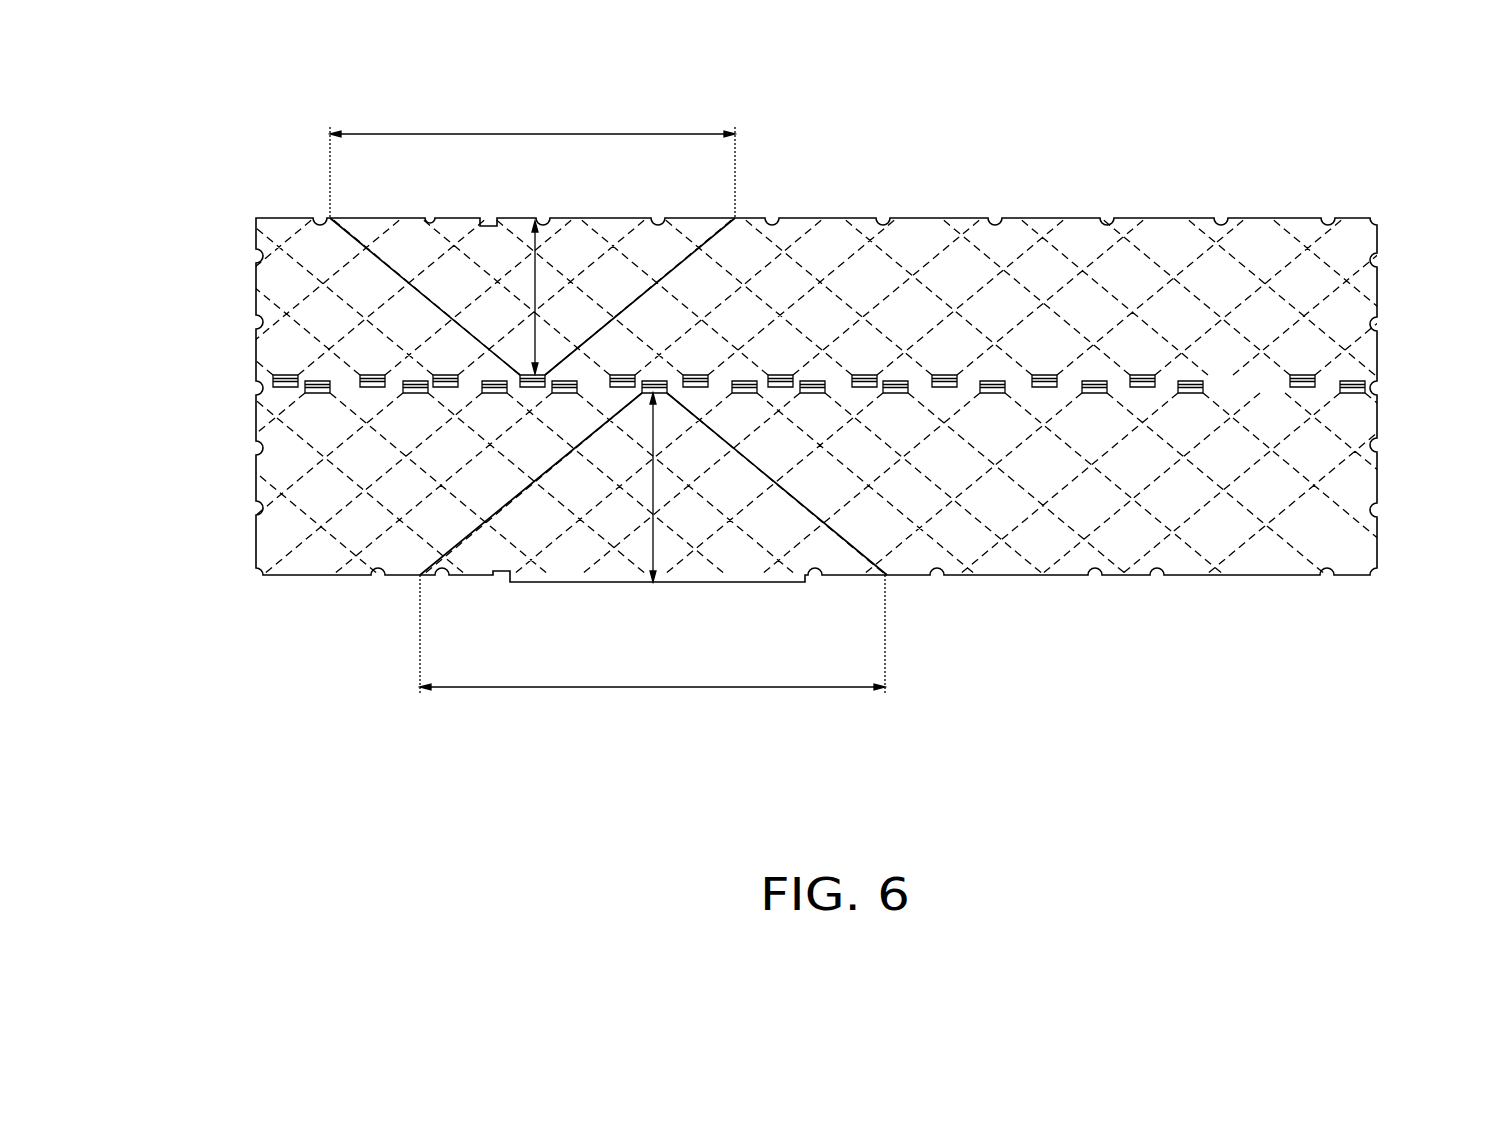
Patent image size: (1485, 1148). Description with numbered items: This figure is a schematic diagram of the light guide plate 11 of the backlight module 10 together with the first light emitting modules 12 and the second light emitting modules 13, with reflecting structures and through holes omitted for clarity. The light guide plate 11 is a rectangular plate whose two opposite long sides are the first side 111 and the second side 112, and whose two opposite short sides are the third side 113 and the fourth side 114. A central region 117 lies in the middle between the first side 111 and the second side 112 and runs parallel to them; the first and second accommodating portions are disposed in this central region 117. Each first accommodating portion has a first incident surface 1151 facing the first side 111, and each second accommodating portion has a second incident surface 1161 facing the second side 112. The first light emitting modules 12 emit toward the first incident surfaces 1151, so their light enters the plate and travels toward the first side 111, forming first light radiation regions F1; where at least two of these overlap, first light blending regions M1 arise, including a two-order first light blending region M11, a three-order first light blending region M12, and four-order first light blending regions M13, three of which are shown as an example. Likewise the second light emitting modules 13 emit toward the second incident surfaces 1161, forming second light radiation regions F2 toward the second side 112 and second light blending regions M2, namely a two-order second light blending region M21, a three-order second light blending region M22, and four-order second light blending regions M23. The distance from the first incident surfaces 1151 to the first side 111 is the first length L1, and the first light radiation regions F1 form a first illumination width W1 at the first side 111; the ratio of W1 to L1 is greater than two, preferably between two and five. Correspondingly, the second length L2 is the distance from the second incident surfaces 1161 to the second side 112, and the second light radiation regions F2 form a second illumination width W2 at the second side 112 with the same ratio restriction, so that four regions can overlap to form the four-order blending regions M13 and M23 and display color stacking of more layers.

The backlight module 10 is at (303, 172).
The light guide plate 11 is at (930, 232).
The first side 111 is at (815, 216).
The second side 112 is at (966, 577).
The third side 113 is at (257, 290).
The fourth side 114 is at (1380, 273).
The central region 117 is at (252, 362).
The first incident surface 1151 is at (1318, 373).
The second incident surface 1161 is at (1358, 396).
The first light emitting module 12 is at (272, 381).
The second light emitting module 13 is at (318, 389).
The first light radiation region F1 is at (1352, 325).
The second light radiation region F2 is at (1356, 461).
The first light blending region M1 is at (742, 264).
The two-order first light blending region M11 is at (266, 262).
The three-order first light blending region M12 is at (307, 236).
The four-order first light blending region M13 is at (579, 258).
The second light blending region M2 is at (742, 520).
The two-order second light blending region M21 is at (283, 514).
The three-order second light blending region M22 is at (302, 562).
The four-order second light blending region M23 is at (372, 556).
The first illumination width W1 is at (532, 163).
The second illumination width W2 is at (652, 634).
The first length L1 is at (533, 297).
The second length L2 is at (655, 487).